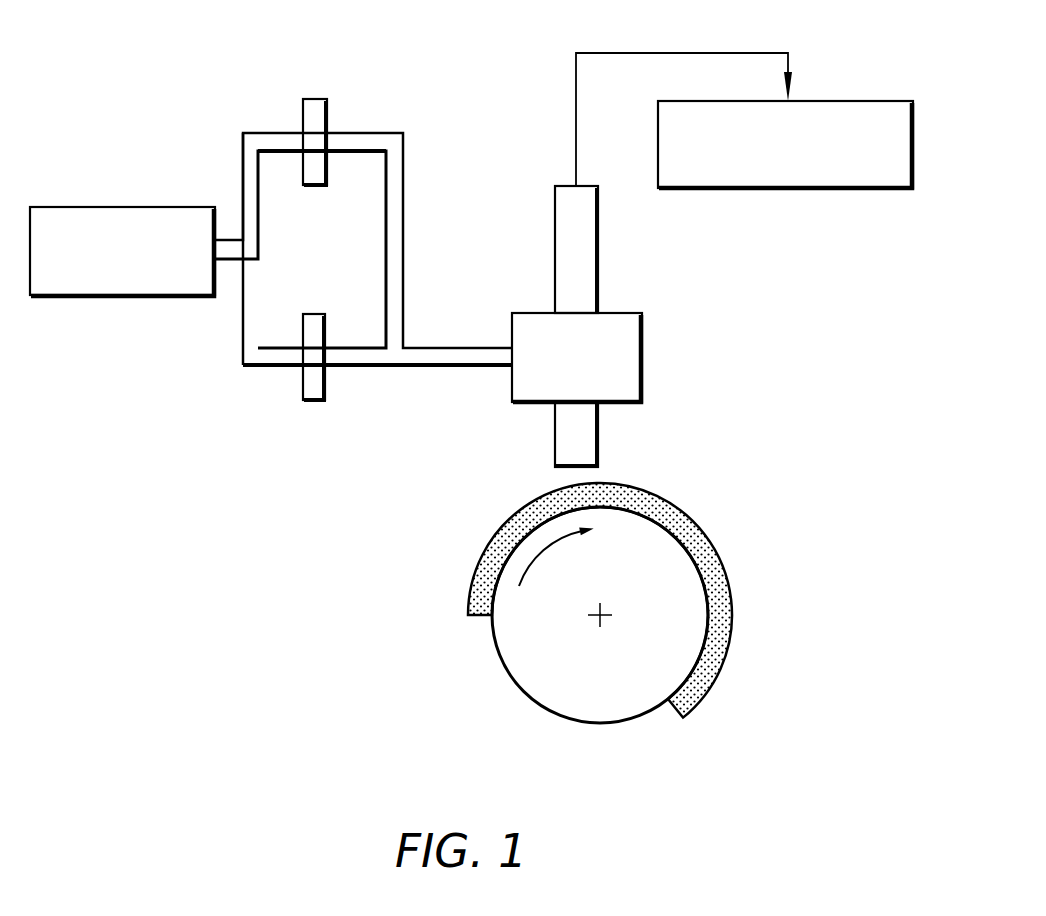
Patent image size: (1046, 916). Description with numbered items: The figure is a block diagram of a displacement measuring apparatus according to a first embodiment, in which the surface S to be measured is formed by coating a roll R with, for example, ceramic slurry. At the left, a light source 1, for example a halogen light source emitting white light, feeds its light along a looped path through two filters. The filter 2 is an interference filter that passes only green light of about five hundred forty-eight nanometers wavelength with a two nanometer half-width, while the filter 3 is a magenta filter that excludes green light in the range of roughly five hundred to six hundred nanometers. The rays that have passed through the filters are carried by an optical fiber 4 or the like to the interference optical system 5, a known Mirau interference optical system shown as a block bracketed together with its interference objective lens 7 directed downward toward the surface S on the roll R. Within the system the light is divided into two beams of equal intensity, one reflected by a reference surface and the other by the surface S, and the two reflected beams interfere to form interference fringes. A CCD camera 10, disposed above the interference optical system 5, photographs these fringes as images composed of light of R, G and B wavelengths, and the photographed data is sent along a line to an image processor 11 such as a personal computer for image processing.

The light source 1 is at (125, 296).
The filter 2 is at (312, 98).
The filter 3 is at (312, 400).
The optical fiber 4 is at (411, 368).
The interference optical system 5 is at (707, 260).
The interference objective lens 7 is at (555, 435).
The CCD camera 10 is at (555, 231).
The image processor 11 is at (777, 188).
The roll R is at (512, 638).
The surface S is at (690, 527).